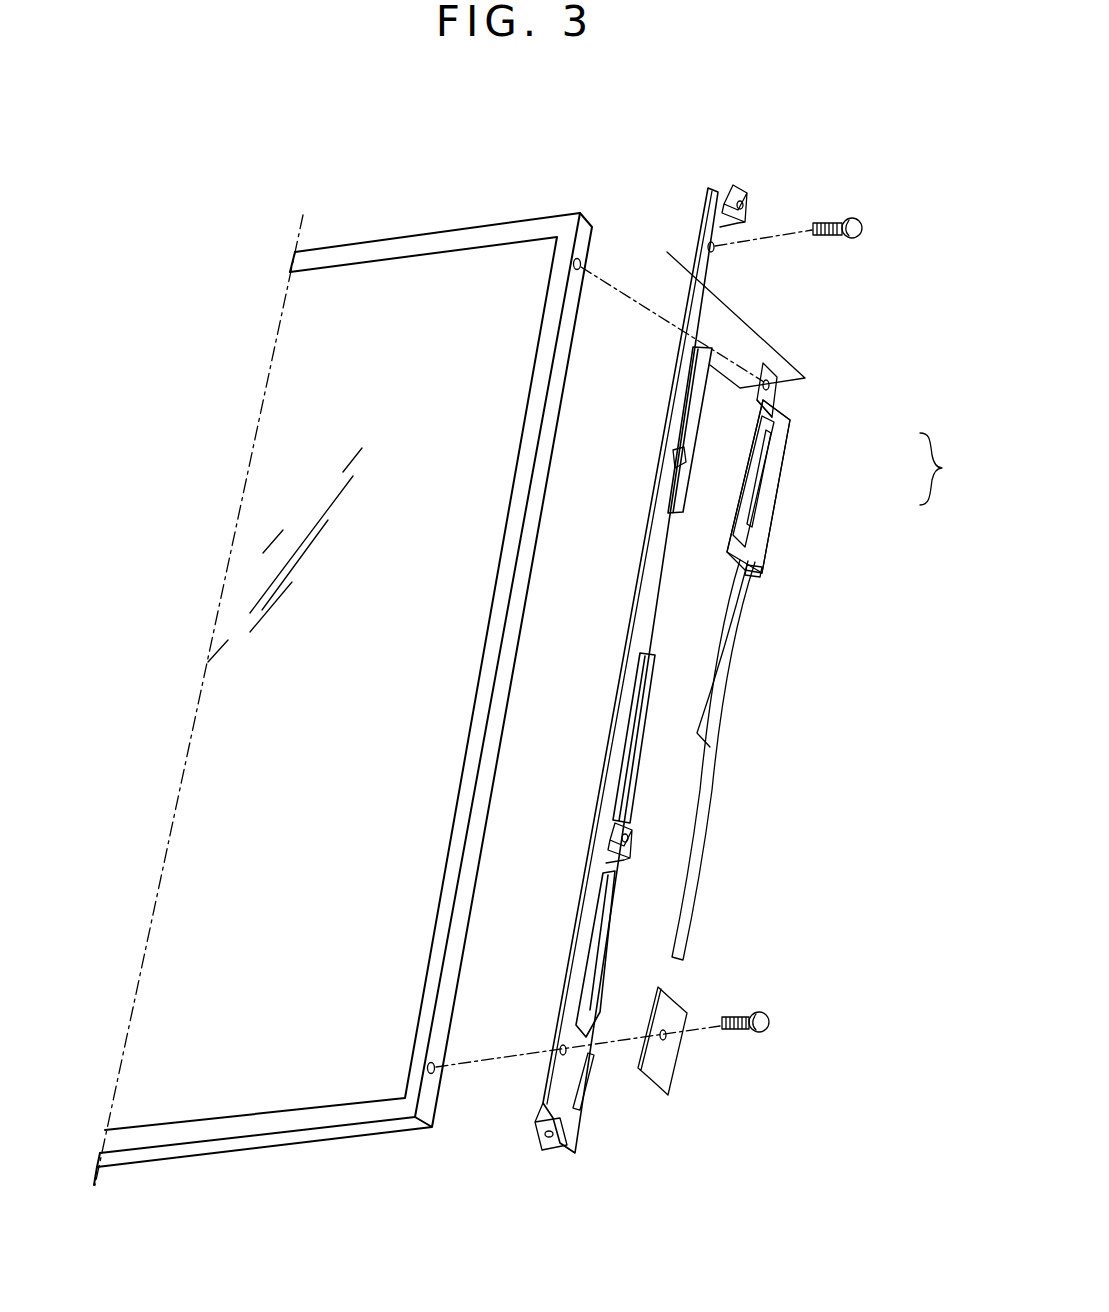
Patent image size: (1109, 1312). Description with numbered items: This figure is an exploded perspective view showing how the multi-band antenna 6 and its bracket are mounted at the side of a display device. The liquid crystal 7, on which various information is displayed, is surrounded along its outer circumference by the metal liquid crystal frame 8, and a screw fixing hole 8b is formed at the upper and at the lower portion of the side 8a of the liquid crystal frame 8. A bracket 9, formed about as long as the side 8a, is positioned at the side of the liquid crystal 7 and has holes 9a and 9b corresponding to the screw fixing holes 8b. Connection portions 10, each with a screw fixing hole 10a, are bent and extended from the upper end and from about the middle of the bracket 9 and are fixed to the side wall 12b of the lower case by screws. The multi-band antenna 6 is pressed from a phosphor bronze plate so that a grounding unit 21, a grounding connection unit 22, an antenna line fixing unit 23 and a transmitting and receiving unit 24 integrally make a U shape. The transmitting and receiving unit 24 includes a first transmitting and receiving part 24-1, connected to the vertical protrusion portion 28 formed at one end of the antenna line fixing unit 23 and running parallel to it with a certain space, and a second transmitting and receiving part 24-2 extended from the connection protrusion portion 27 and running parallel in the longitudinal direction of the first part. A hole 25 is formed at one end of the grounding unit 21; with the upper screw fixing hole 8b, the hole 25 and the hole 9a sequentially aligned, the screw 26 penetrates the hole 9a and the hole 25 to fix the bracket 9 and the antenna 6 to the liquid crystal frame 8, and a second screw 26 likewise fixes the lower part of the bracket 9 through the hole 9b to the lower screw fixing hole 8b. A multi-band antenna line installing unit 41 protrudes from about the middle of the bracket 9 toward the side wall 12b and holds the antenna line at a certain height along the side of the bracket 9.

The multi-band antenna 6 is at (807, 388).
The liquid crystal 7 is at (455, 277).
The liquid crystal frame 8 is at (498, 235).
The side of the liquid crystal frame 8a is at (584, 233).
The screw fixing hole 8b is at (581, 262).
The bracket 9 is at (716, 195).
The hole of the bracket 9a is at (716, 250).
The hole of the bracket 9b is at (567, 1056).
The connection portion 10 is at (743, 198).
The screw fixing hole 10a is at (747, 201).
The side wall 12b is at (672, 1066).
The grounding unit 21 is at (736, 562).
The grounding connection unit 22 is at (751, 580).
The antenna line fixing unit 23 is at (766, 536).
The transmitting and receiving unit 24 is at (947, 469).
The first transmitting and receiving part 24-1 is at (777, 452).
The second transmitting and receiving part 24-2 is at (772, 474).
The hole 25 is at (771, 380).
The screw 26 is at (851, 217).
The connection protrusion portion 27 is at (759, 1011).
The vertical protrusion portion 28 is at (782, 409).
The multi-band antenna line installing unit 41 is at (672, 456).